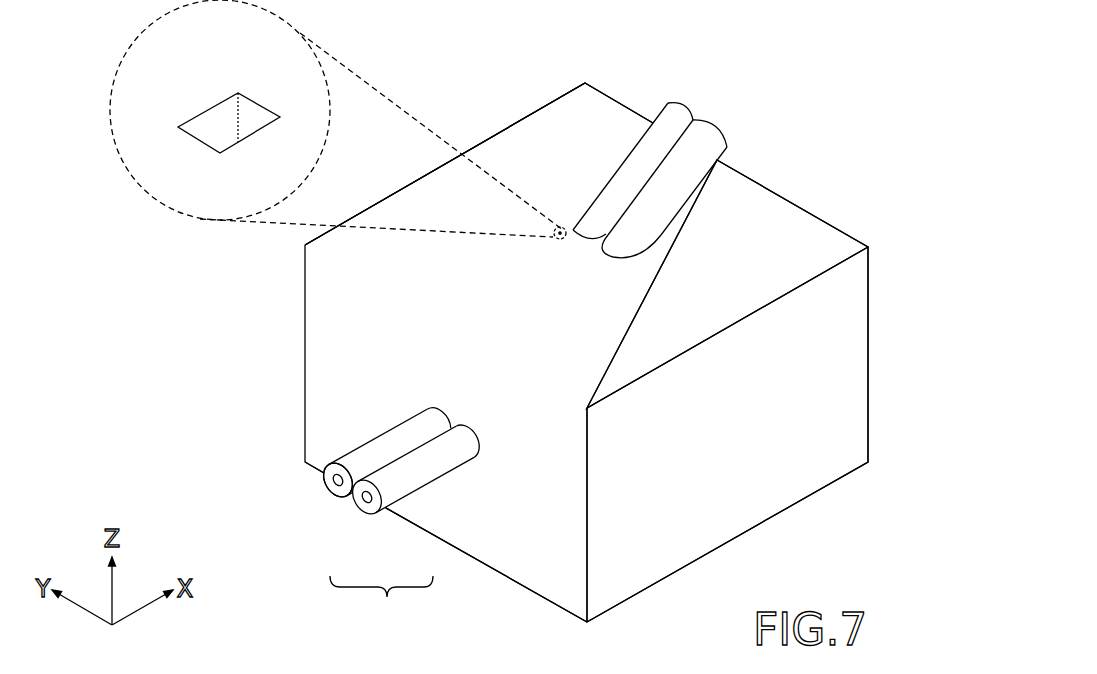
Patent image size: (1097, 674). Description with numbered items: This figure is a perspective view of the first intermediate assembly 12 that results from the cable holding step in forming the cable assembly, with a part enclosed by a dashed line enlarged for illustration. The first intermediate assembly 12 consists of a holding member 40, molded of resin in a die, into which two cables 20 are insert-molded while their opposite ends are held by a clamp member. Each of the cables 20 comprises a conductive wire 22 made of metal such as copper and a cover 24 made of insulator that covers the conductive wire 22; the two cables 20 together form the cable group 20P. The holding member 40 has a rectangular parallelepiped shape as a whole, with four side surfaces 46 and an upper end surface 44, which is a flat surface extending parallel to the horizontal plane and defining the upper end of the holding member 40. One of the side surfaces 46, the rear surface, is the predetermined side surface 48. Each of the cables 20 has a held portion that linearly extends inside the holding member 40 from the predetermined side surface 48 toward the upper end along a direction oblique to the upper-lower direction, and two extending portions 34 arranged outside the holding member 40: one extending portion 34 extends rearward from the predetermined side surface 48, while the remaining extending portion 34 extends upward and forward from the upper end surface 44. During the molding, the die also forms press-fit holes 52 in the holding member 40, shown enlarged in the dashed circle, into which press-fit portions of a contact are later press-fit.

The first intermediate assembly 12 is at (744, 31).
The cable 20 is at (340, 503).
The battery pack 20P is at (387, 597).
The conductive wire 22 is at (337, 481).
The cover 24 is at (333, 479).
The extending portion 34 is at (663, 143).
The holding member 40 is at (588, 81).
The upper end surface 44 is at (408, 208).
The side surface 46 is at (728, 505).
The predetermined side surface 48 is at (557, 568).
The press-fit hole 52 is at (226, 131).